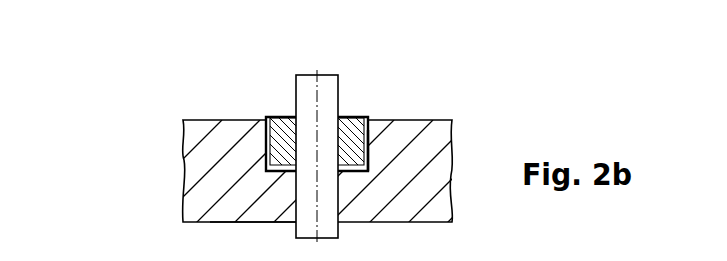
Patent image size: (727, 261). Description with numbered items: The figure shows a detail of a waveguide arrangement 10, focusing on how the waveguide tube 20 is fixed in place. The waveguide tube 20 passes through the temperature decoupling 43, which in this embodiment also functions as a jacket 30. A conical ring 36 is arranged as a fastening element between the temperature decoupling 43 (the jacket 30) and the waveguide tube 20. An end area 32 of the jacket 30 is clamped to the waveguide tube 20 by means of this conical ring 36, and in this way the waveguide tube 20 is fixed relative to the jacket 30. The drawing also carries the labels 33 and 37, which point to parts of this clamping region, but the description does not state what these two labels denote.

The waveguide arrangement 10 is at (150, 81).
The waveguide tube 20 is at (323, 218).
The jacket 30 is at (339, 178).
The temperature decoupling 43 is at (227, 177).
The end area 32 is at (378, 100).
The insert wall 33 is at (368, 144).
The conical ring 36 is at (281, 116).
The underside 37 is at (253, 241).